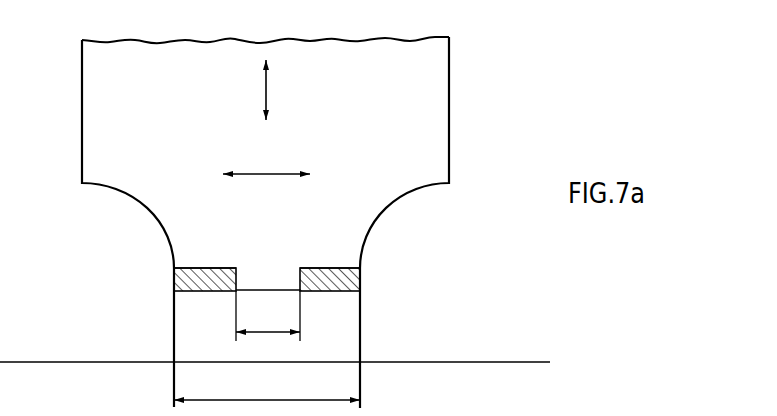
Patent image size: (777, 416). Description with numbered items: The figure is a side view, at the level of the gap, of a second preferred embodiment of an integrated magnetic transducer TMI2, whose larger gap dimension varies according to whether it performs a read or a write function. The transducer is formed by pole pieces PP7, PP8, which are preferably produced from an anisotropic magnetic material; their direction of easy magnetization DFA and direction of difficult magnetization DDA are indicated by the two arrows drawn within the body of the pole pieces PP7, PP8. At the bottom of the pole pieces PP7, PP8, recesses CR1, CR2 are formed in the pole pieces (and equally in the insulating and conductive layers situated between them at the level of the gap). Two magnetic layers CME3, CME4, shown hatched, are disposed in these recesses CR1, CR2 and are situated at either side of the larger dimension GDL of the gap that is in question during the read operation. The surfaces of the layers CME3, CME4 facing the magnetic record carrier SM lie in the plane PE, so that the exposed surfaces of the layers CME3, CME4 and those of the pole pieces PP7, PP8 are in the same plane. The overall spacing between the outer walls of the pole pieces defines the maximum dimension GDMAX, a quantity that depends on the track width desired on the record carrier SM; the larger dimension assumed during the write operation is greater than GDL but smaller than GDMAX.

The integrated transducer TMI2 is at (451, 170).
The pole piece PP7 is at (449, 54).
The pole piece PP8 is at (535, 47).
The direction of difficult magnetization DDA is at (293, 90).
The direction of easy magnetization DFA is at (266, 161).
The magnetic layer CME3 is at (215, 292).
The magnetic layer CME4 is at (322, 292).
The recess CR1 is at (213, 267).
The recess CR2 is at (321, 267).
The plane PE is at (300, 290).
The larger dimension of the gap during the read operation GDL is at (268, 316).
The maximum larger dimension of the gap GDMAX is at (267, 382).
The magnetic record carrier SM is at (508, 362).